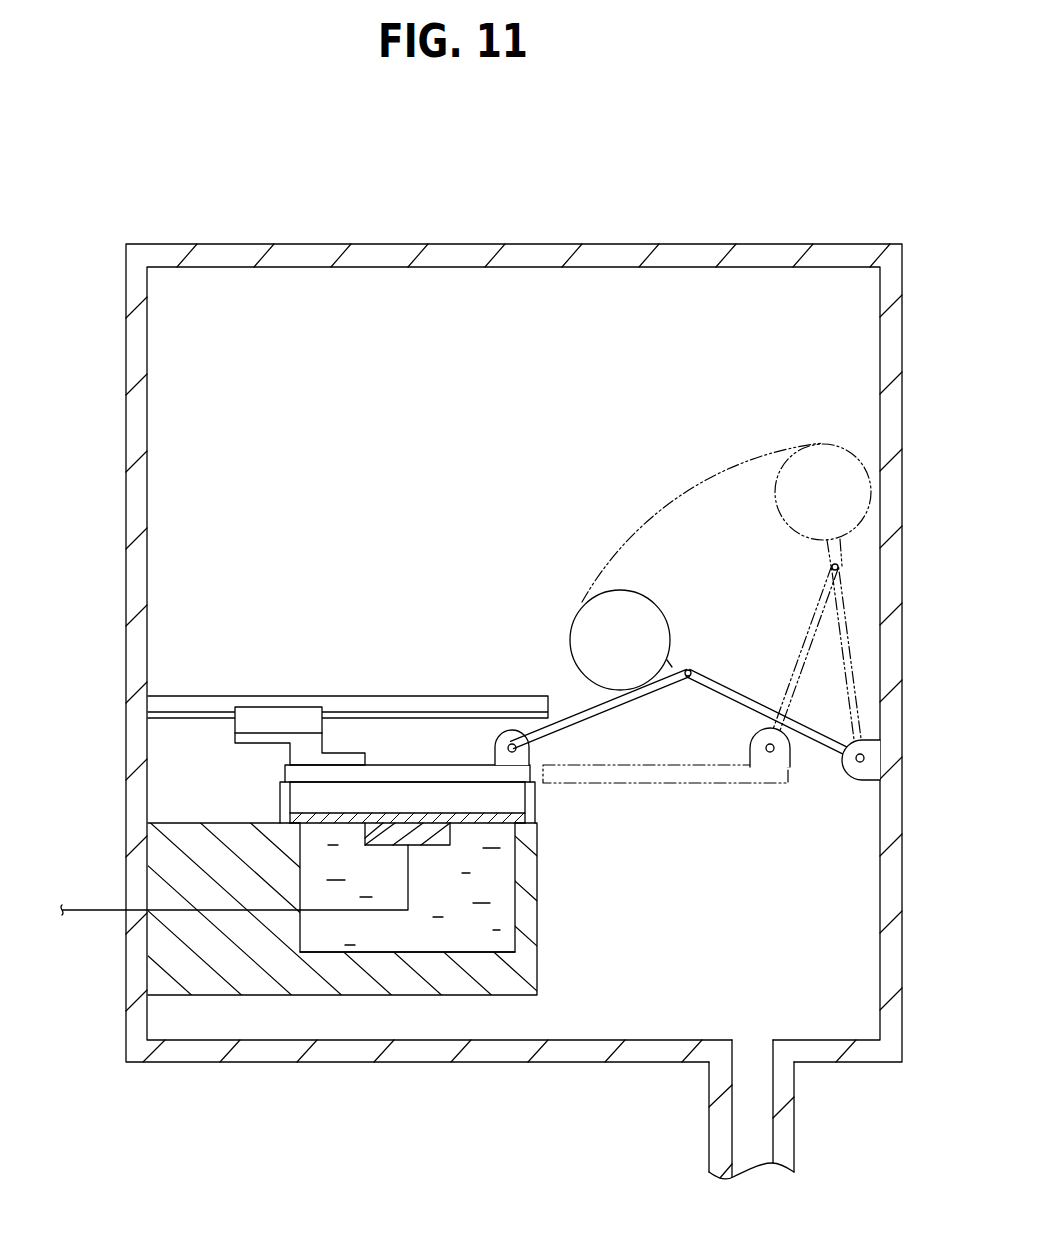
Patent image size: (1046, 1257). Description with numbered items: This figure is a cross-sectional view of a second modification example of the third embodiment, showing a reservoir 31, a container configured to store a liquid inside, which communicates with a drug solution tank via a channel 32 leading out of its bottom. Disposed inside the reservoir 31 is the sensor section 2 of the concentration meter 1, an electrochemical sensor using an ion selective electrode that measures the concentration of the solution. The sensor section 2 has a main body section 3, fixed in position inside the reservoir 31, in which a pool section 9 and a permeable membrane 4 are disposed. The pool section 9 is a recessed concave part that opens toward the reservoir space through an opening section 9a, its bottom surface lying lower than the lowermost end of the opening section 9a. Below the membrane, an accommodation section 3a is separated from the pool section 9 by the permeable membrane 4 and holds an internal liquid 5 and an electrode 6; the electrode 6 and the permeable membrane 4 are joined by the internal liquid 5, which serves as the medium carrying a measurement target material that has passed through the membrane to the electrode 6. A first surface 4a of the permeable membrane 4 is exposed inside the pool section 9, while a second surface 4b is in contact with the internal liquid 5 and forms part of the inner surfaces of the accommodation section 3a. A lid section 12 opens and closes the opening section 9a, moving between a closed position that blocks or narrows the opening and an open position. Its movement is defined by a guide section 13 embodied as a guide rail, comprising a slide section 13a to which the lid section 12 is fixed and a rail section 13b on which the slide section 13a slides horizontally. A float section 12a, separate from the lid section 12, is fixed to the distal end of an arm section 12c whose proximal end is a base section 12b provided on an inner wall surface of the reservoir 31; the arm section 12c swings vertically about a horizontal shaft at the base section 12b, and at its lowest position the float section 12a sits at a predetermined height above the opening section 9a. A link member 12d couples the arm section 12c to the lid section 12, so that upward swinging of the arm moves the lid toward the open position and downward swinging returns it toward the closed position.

The concentration meter 1 is at (202, 617).
The sensor section 2 is at (586, 870).
The main body section 3 is at (535, 970).
The accommodation section 3a is at (525, 948).
The permeable membrane 4 is at (290, 823).
The first surface 4a is at (337, 817).
The second surface 4b is at (525, 843).
The internal liquid 5 is at (525, 920).
The electrode 6 is at (525, 878).
The pool section 9 is at (525, 818).
The opening section 9a is at (527, 797).
The lid section 12 is at (425, 763).
The float section 12a is at (582, 606).
The base section 12b is at (856, 777).
The arm section 12c is at (733, 683).
The link member 12d is at (633, 704).
The guide section 13 is at (367, 642).
The slide section 13a is at (293, 716).
The rail section 13b is at (352, 706).
The reservoir 31 is at (511, 244).
The channel 32 is at (710, 1160).